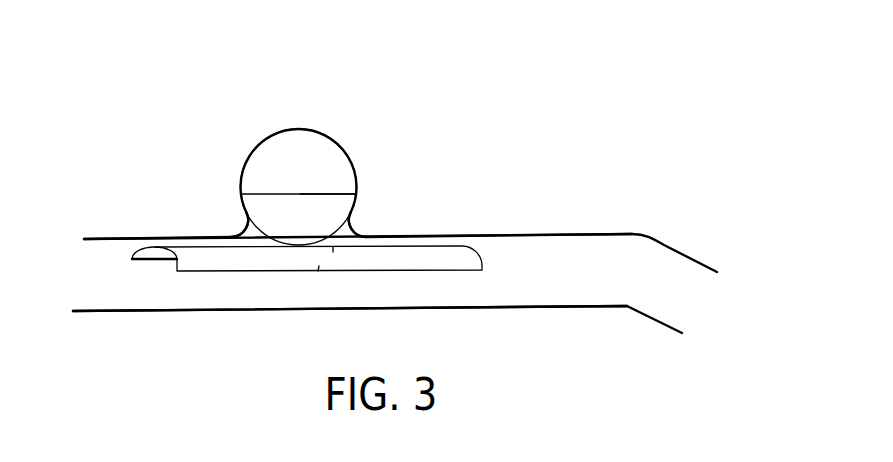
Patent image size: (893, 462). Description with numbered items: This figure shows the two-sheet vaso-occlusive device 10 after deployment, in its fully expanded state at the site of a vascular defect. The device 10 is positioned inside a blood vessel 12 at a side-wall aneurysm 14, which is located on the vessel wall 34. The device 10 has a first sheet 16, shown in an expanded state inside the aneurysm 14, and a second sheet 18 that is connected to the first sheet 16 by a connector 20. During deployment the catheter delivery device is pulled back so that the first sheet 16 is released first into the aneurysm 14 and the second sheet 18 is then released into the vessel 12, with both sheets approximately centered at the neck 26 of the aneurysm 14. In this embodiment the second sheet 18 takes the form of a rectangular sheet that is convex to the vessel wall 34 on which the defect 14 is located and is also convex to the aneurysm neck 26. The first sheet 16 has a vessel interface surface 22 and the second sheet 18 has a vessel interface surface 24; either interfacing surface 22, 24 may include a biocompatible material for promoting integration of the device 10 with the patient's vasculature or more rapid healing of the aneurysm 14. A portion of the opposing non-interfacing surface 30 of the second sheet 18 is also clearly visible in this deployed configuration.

The vaso-occlusive device 10 is at (255, 273).
The blood vessel 12 is at (537, 308).
The side-wall aneurysm 14 is at (245, 165).
The first sheet 16 is at (322, 208).
The second sheet 18 is at (452, 247).
The connector 20 is at (333, 248).
The vessel interface surface of first sheet 22 is at (285, 213).
The vessel interface surface of second sheet 24 is at (320, 257).
The aneurysm neck 26 is at (237, 228).
The non-interfacing surface 30 is at (150, 255).
The vessel wall 34 is at (545, 233).